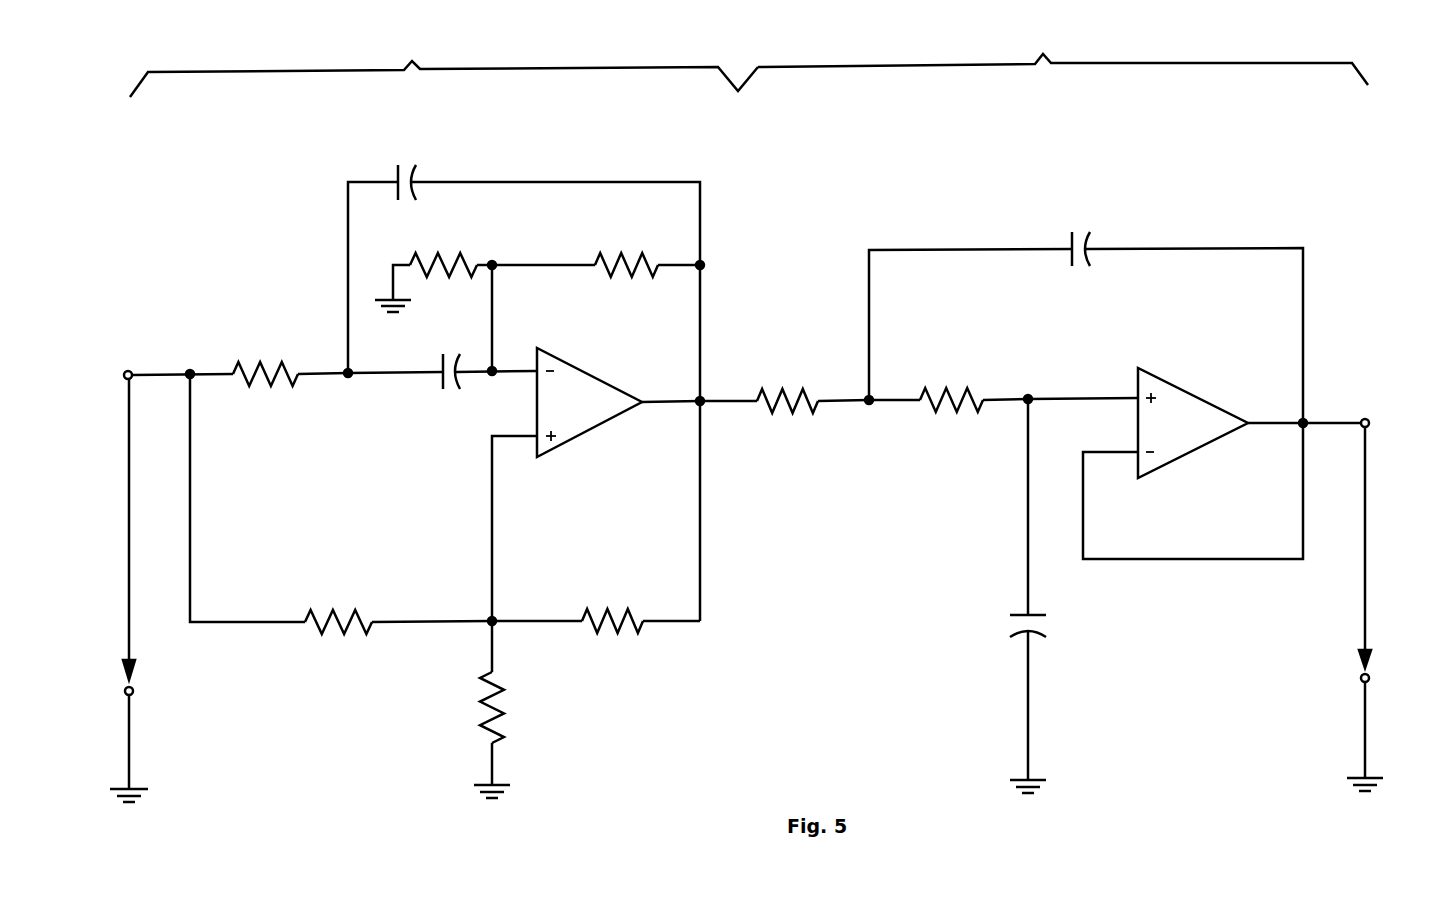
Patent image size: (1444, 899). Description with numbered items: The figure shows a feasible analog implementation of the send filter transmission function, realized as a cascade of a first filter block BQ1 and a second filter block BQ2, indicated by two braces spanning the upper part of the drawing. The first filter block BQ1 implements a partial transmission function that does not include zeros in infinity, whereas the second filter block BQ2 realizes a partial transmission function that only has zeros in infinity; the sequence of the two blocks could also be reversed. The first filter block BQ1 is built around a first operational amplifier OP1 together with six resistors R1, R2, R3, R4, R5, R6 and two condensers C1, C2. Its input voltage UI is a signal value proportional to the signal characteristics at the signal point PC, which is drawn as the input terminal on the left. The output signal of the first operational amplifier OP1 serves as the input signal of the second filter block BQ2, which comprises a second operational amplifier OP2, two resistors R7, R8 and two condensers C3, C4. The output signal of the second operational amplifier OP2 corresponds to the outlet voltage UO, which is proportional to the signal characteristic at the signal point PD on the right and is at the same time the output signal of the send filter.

The first filter block BQ1 is at (444, 65).
The second filter block BQ2 is at (1063, 56).
The signal point PC is at (147, 370).
The signal point PD is at (1338, 421).
The input voltage UI is at (121, 590).
The outlet voltage UO is at (1376, 609).
The resistor R1 is at (290, 357).
The resistor R2 is at (341, 504).
The resistor R3 is at (596, 606).
The resistor R4 is at (596, 250).
The resistor R5 is at (433, 269).
The resistor R6 is at (507, 709).
The resistor R7 is at (784, 420).
The resistor R8 is at (948, 415).
The condenser C1 is at (442, 390).
The condenser C2 is at (524, 252).
The condenser C3 is at (1045, 596).
The condenser C4 is at (1086, 314).
The first operational amplifier OP1 is at (596, 484).
The second operational amplifier OP2 is at (1193, 463).